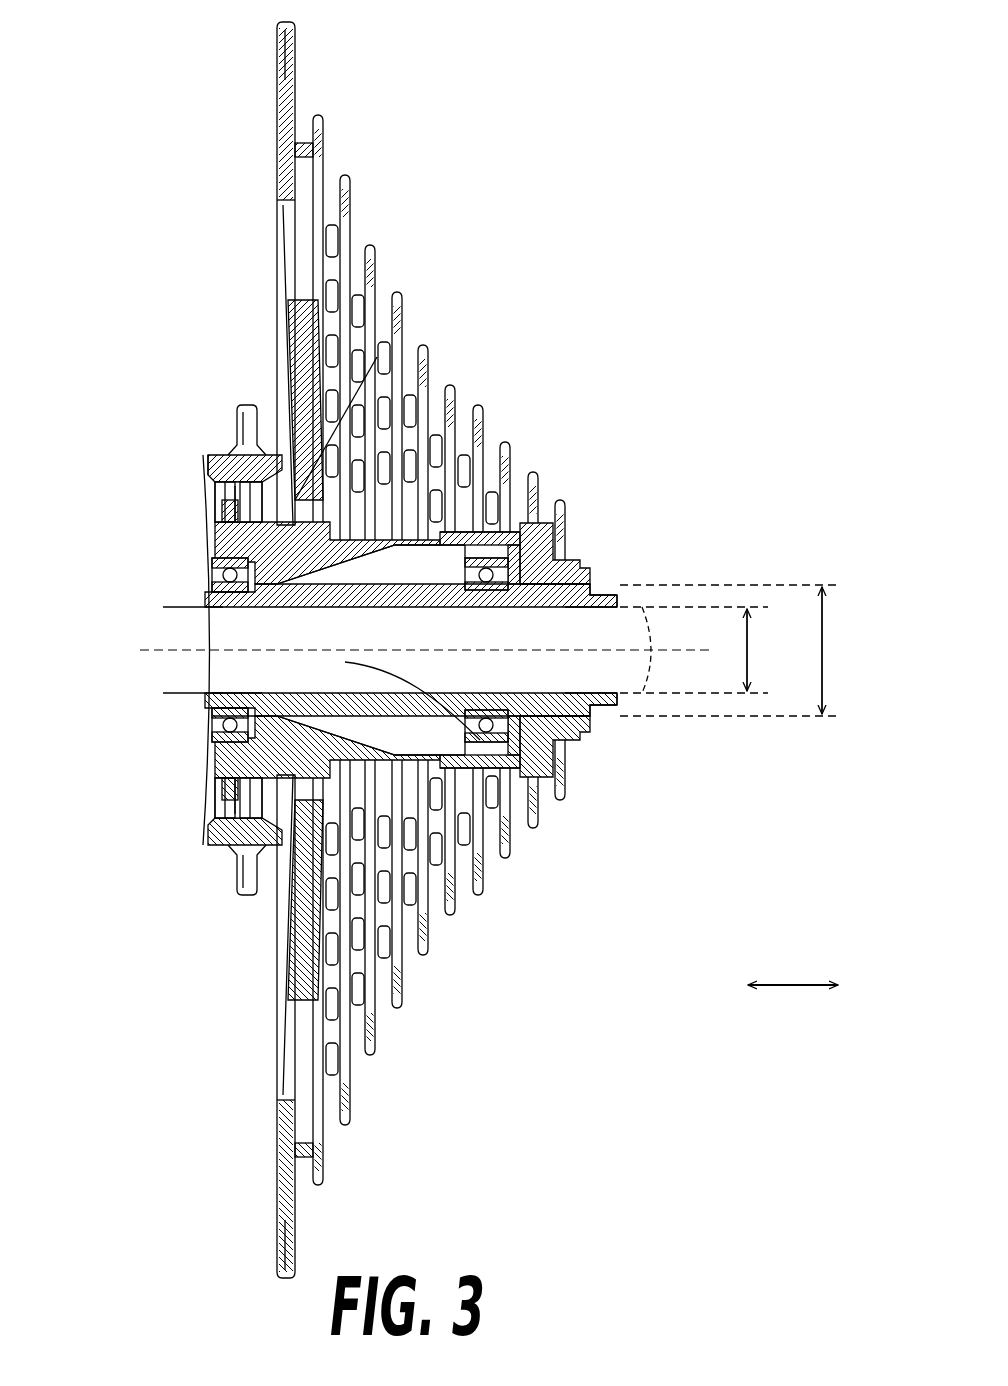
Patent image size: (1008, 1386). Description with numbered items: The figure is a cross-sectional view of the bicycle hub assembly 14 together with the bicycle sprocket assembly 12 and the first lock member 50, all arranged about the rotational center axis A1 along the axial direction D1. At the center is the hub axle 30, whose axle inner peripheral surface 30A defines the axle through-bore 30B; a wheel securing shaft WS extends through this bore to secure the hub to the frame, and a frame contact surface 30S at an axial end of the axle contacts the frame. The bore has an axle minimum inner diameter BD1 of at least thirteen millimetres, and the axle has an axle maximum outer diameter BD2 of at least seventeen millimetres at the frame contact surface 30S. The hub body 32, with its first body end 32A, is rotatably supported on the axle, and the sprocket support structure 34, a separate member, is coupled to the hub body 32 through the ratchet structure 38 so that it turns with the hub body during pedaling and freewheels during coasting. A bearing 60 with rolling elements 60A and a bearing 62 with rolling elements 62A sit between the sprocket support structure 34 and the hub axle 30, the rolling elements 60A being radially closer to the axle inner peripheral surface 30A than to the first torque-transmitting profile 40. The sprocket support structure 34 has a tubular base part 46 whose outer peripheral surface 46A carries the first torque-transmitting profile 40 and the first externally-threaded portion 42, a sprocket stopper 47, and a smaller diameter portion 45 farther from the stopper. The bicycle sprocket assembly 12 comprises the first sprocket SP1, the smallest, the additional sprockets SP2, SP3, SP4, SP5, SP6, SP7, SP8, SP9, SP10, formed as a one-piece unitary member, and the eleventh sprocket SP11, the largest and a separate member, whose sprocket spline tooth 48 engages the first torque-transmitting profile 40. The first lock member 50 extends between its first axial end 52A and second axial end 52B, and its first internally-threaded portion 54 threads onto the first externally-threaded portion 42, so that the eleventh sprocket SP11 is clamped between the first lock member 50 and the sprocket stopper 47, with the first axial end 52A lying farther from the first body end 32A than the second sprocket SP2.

The bicycle sprocket assembly 12 is at (588, 240).
The bicycle hub assembly 14 is at (135, 355).
The hub axle 30 is at (778, 738).
The axle inner peripheral surface 30A is at (582, 733).
The axle through-bore 30B is at (618, 716).
The frame contact surface 30S is at (618, 598).
The hub body 32 is at (195, 405).
The first body end 32A is at (245, 405).
The sprocket support structure 34 is at (60, 545).
The ratchet structure 38 is at (210, 553).
The first torque-transmitting profile 40 is at (235, 608).
The first externally-threaded portion 42 is at (322, 545).
The smaller diameter portion 45 is at (345, 662).
The base part 46 is at (225, 693).
The outer peripheral surface 46A is at (222, 722).
The sprocket stopper 47 is at (212, 596).
The sprocket spline tooth 48 is at (308, 787).
The first lock member 50 is at (690, 832).
The first axial end 52A is at (582, 735).
The second axial end 52B is at (377, 943).
The first internally-threaded portion 54 is at (505, 862).
The bearing 60 is at (213, 575).
The rolling elements 60A is at (212, 588).
The bearing 62 is at (510, 573).
The rolling elements 62A is at (574, 552).
The rotational center axis A1 is at (683, 652).
The axle minimum inner diameter BD1 is at (747, 650).
The axle maximum outer diameter BD2 is at (823, 648).
The axial direction D1 is at (793, 1003).
The wheel securing shaft WS is at (617, 597).
The first sprocket SP1 is at (561, 500).
The second sprocket SP2 is at (533, 472).
The third sprocket SP3 is at (505, 442).
The fourth sprocket SP4 is at (478, 405).
The fifth sprocket SP5 is at (450, 387).
The sixth sprocket SP6 is at (423, 345).
The seventh sprocket SP7 is at (397, 292).
The eighth sprocket SP8 is at (370, 245).
The ninth sprocket SP9 is at (345, 175).
The tenth sprocket SP10 is at (318, 115).
The eleventh sprocket SP11 is at (283, 24).